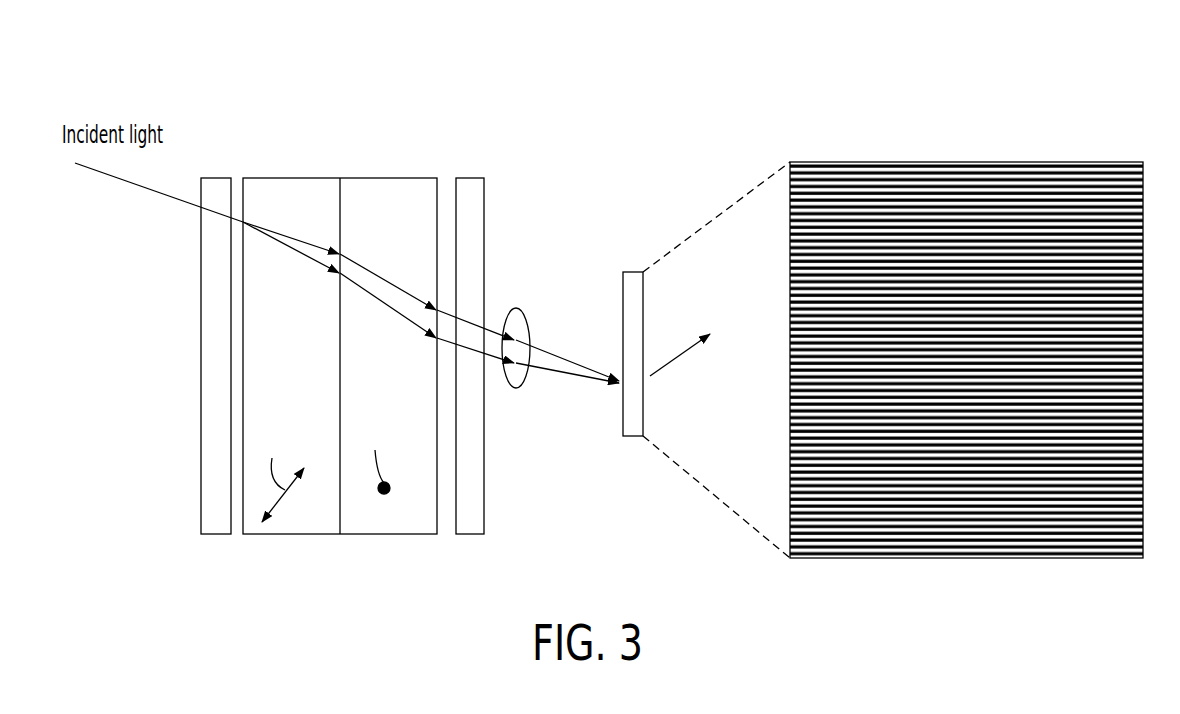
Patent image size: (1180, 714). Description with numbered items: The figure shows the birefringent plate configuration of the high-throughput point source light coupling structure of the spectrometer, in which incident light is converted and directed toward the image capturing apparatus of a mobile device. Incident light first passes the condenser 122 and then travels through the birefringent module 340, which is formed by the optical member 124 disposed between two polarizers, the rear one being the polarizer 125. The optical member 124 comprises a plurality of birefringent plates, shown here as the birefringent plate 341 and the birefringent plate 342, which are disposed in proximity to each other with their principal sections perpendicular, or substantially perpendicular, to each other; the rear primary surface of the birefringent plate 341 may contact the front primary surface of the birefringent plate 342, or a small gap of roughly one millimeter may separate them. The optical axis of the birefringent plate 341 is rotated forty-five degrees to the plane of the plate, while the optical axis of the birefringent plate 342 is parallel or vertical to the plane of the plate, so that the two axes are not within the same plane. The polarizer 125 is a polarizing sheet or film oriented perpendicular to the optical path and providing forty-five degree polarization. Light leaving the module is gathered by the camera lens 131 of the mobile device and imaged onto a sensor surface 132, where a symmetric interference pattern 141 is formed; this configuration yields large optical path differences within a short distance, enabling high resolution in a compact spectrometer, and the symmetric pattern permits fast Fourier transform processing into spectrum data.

The condenser 122 is at (201, 478).
The optical member 124 is at (437, 163).
The polarizer 125 is at (484, 512).
The camera lens 131 is at (525, 318).
The detector plane 132 is at (632, 437).
The interference pattern 141 is at (972, 170).
The birefringent module 340 is at (480, 116).
The birefringent plate 341 is at (293, 534).
The birefringent plate 342 is at (390, 534).